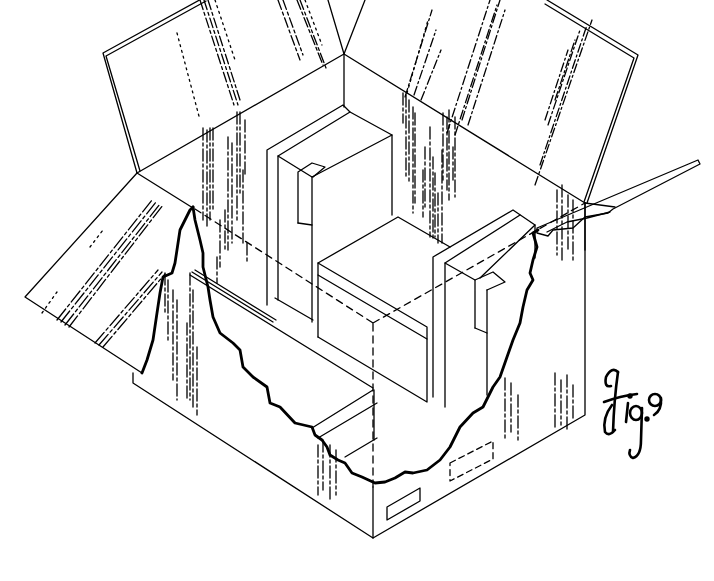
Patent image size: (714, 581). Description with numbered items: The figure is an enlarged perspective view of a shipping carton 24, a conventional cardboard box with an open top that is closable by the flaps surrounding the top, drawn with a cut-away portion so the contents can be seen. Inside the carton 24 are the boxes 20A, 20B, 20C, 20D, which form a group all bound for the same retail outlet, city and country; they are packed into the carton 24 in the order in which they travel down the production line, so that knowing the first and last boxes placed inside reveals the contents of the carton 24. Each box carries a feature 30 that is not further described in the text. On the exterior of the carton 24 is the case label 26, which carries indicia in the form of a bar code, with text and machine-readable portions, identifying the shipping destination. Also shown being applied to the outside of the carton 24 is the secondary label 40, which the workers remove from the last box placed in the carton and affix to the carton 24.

The shipping carton 24 is at (178, 86).
The box 20B is at (226, 213).
The notch 30 is at (338, 279).
The box 20C is at (491, 309).
The box 20D is at (546, 308).
The box 20A is at (288, 441).
The secondary label 40 is at (454, 512).
The case label 26 is at (493, 481).